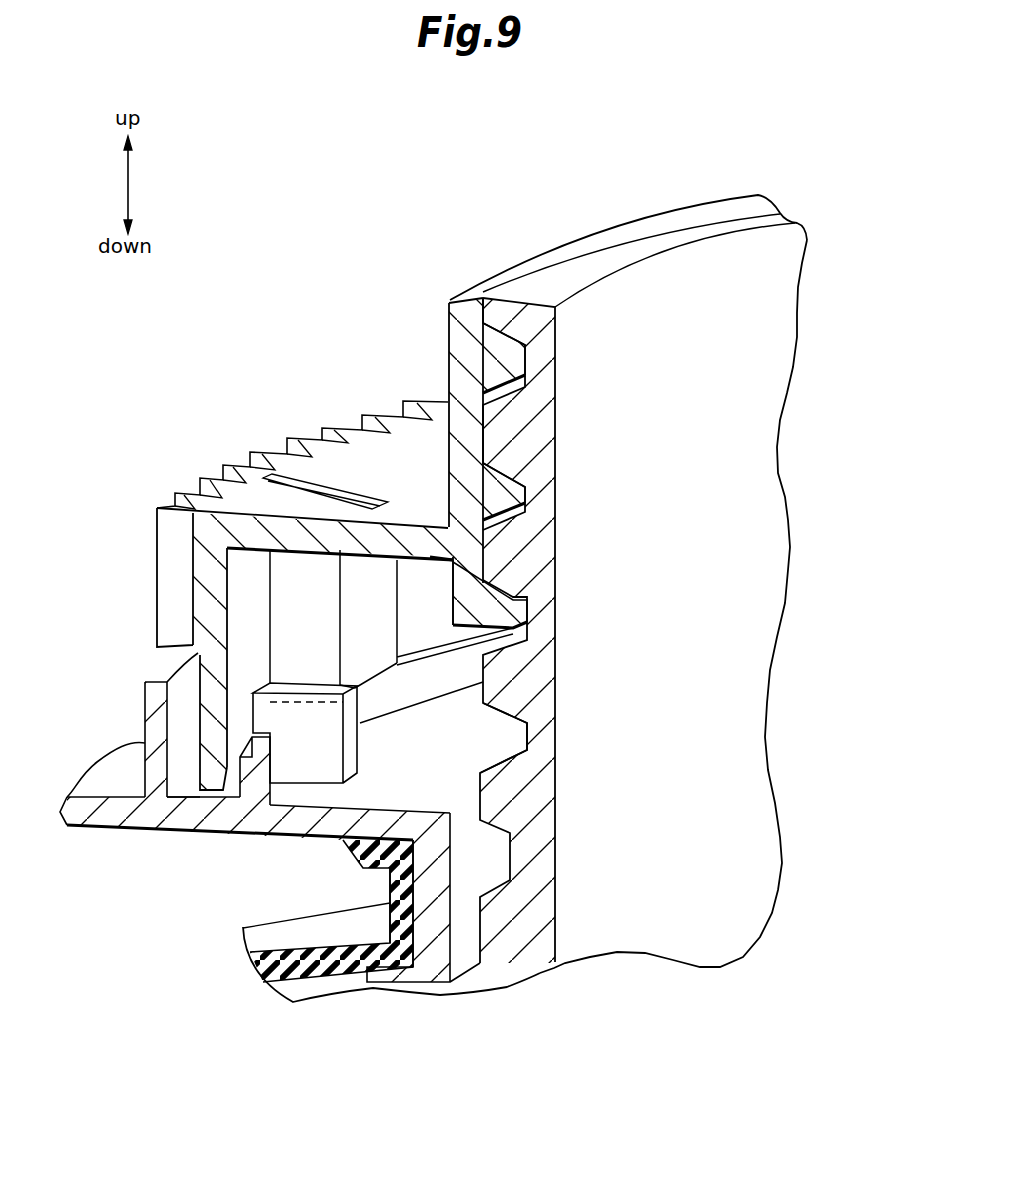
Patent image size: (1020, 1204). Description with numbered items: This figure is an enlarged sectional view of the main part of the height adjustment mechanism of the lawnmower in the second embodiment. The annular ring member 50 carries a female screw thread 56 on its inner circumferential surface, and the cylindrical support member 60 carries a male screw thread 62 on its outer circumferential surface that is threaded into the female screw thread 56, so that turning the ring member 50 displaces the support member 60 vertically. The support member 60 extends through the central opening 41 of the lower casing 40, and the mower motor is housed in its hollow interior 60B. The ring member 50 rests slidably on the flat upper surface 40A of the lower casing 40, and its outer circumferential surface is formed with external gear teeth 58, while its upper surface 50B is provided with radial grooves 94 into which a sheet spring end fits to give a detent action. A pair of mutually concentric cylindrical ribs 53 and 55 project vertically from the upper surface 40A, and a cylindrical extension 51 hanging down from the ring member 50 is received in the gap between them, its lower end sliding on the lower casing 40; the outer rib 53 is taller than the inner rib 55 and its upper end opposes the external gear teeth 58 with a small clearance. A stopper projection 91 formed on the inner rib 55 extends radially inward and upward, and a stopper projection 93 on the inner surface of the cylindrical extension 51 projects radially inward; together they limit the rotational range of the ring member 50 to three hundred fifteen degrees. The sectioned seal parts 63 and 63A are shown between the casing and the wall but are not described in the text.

The lower casing 40 is at (237, 795).
The upper surface of the lower casing 40A is at (118, 775).
The central opening 41 is at (470, 925).
The annular ring member 50 is at (389, 460).
The upper surface of the ring member 50B is at (335, 452).
The cylindrical extension 51 is at (200, 795).
The outer rib 53 is at (115, 805).
The inner rib 55 is at (258, 778).
The female screw thread 56 is at (500, 585).
The external gear teeth 58 is at (172, 546).
The cylindrical support member 60 is at (522, 447).
The hollow interior of the support member 60B is at (673, 282).
The male screw thread 62 is at (500, 673).
The seal gasket 63 is at (305, 970).
The gasket vertical portion 63A is at (405, 910).
The stopper projection 91 is at (325, 745).
The stopper projection 93 is at (387, 667).
The groove 94 is at (278, 485).